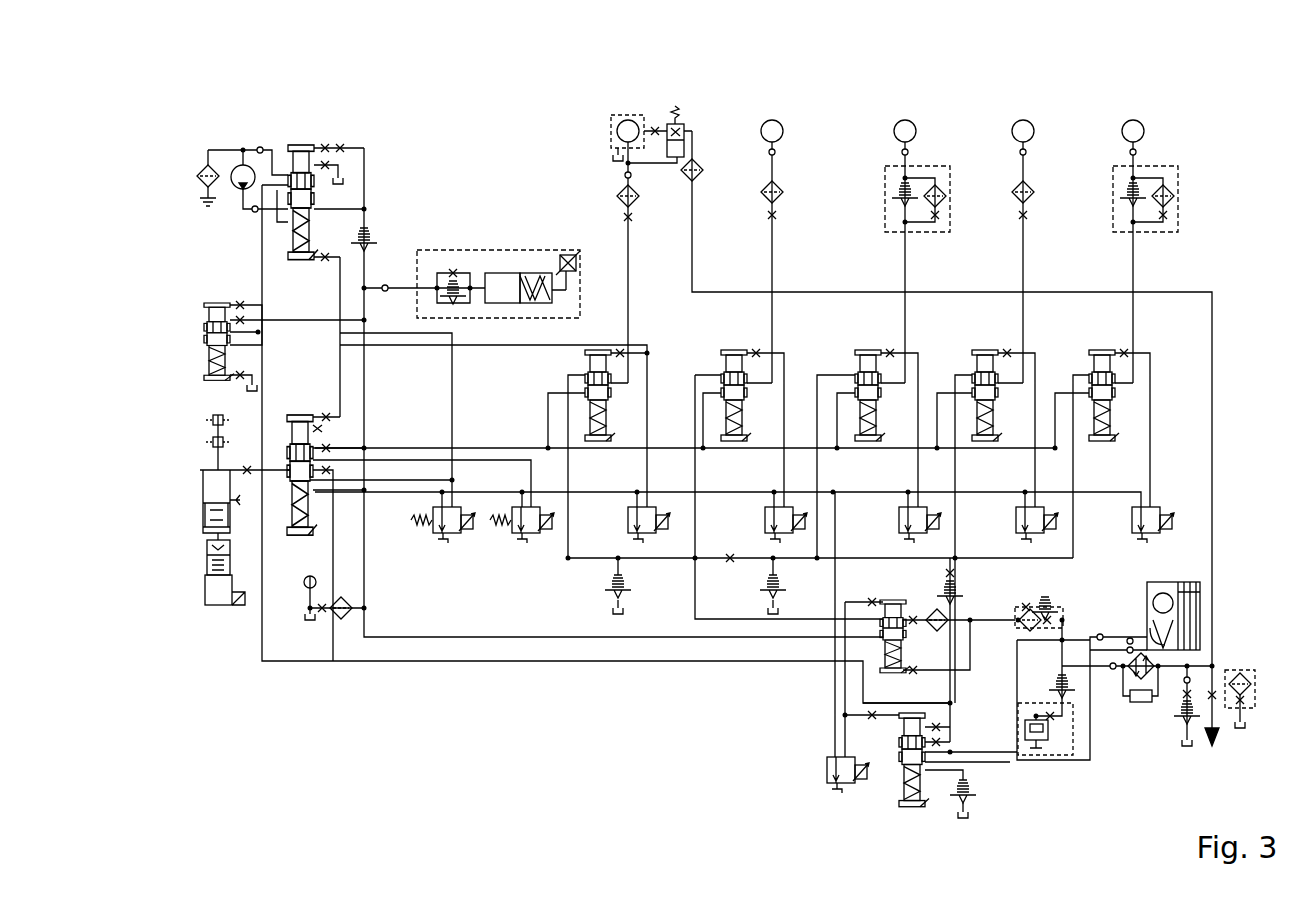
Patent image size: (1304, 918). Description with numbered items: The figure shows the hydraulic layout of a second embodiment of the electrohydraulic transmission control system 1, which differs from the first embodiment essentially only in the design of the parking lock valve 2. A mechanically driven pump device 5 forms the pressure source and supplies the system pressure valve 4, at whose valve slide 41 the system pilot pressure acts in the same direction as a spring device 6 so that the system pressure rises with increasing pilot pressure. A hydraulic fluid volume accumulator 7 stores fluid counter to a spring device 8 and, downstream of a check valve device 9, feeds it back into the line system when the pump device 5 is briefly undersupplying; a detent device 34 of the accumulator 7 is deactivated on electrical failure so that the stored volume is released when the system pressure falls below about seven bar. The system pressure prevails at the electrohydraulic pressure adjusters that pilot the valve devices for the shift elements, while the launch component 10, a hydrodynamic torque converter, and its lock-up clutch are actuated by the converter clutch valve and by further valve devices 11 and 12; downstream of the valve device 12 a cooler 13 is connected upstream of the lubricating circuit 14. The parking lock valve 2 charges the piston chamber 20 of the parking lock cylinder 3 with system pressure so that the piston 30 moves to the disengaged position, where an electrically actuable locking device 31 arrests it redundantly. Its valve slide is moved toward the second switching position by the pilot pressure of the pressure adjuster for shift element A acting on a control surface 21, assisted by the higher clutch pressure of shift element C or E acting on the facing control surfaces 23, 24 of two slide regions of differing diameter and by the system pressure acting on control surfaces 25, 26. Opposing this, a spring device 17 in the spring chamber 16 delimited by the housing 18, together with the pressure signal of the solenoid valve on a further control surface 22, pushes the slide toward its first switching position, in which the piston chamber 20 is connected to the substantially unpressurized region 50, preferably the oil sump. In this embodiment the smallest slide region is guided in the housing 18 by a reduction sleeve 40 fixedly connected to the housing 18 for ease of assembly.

The electrohydraulic transmission control system 1 is at (590, 757).
The parking lock valve 2 is at (291, 548).
The parking lock cylinder 3 is at (204, 515).
The system pressure valve 4 is at (305, 140).
The pump device 5 is at (243, 177).
The spring device 6 is at (300, 413).
The hydraulic fluid volume accumulator 7 is at (506, 248).
The spring device 8 is at (530, 272).
The check valve device 9 is at (360, 226).
The launch component 10 is at (1196, 580).
The valve device 11 is at (205, 331).
The valve device 12 is at (922, 782).
The cooler 13 is at (1128, 678).
The lubricating circuit 14 is at (1218, 752).
The spring chamber 16 is at (300, 600).
The spring device 17 is at (302, 541).
The housing 18 is at (297, 430).
The piston chamber 20 is at (210, 487).
The control surface 21 is at (262, 290).
The control surface 22 is at (322, 548).
The control surface 23 is at (312, 413).
The control surface 24 is at (310, 436).
The control surface 25 is at (376, 512).
The control surface 26 is at (300, 292).
The piston 30 is at (207, 545).
The locking device 31 is at (220, 605).
The detent device 34 is at (566, 253).
The reduction sleeve 40 is at (347, 522).
The valve slide 41 is at (296, 176).
The unpressurized region 50 is at (432, 540).